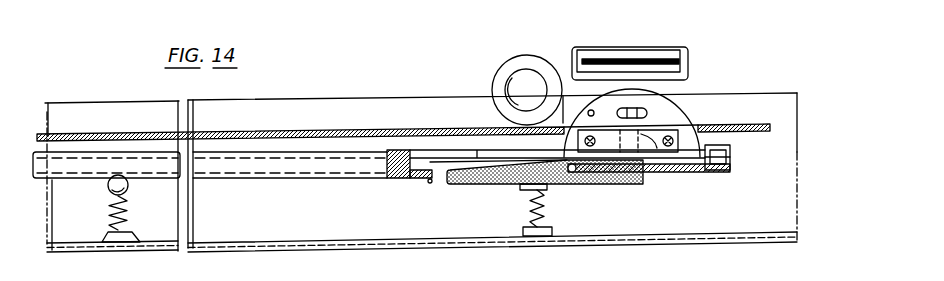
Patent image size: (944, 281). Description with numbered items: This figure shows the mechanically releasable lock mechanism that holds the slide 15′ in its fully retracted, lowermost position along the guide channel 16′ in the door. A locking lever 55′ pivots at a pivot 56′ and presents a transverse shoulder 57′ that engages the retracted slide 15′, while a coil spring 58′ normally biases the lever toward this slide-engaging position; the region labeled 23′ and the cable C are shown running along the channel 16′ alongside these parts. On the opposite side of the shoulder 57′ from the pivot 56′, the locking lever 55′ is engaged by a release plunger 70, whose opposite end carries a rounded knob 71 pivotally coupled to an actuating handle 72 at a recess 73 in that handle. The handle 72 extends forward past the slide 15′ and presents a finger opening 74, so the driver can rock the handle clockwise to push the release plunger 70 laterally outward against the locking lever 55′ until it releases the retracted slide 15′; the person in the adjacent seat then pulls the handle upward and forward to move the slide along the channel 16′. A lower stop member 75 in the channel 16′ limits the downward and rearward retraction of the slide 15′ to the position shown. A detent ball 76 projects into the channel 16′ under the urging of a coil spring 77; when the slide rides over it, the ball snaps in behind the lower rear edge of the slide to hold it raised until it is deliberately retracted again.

The cable C is at (316, 130).
The slide 15′ is at (672, 115).
The guide channel 16′ is at (298, 178).
The rod end block 23′ is at (411, 146).
The locking lever 55′ is at (483, 186).
The pivot 56′ is at (429, 183).
The transverse shoulder 57′ is at (583, 158).
The coil spring 58′ is at (543, 206).
The release plunger 70 is at (654, 158).
The rounded knob 71 is at (630, 109).
The actuating handle 72 is at (557, 112).
The recess 73 is at (639, 109).
The finger opening 74 is at (508, 84).
The lower stop member 75 is at (731, 157).
The detent ball 76 is at (128, 189).
The coil spring 77 is at (108, 210).